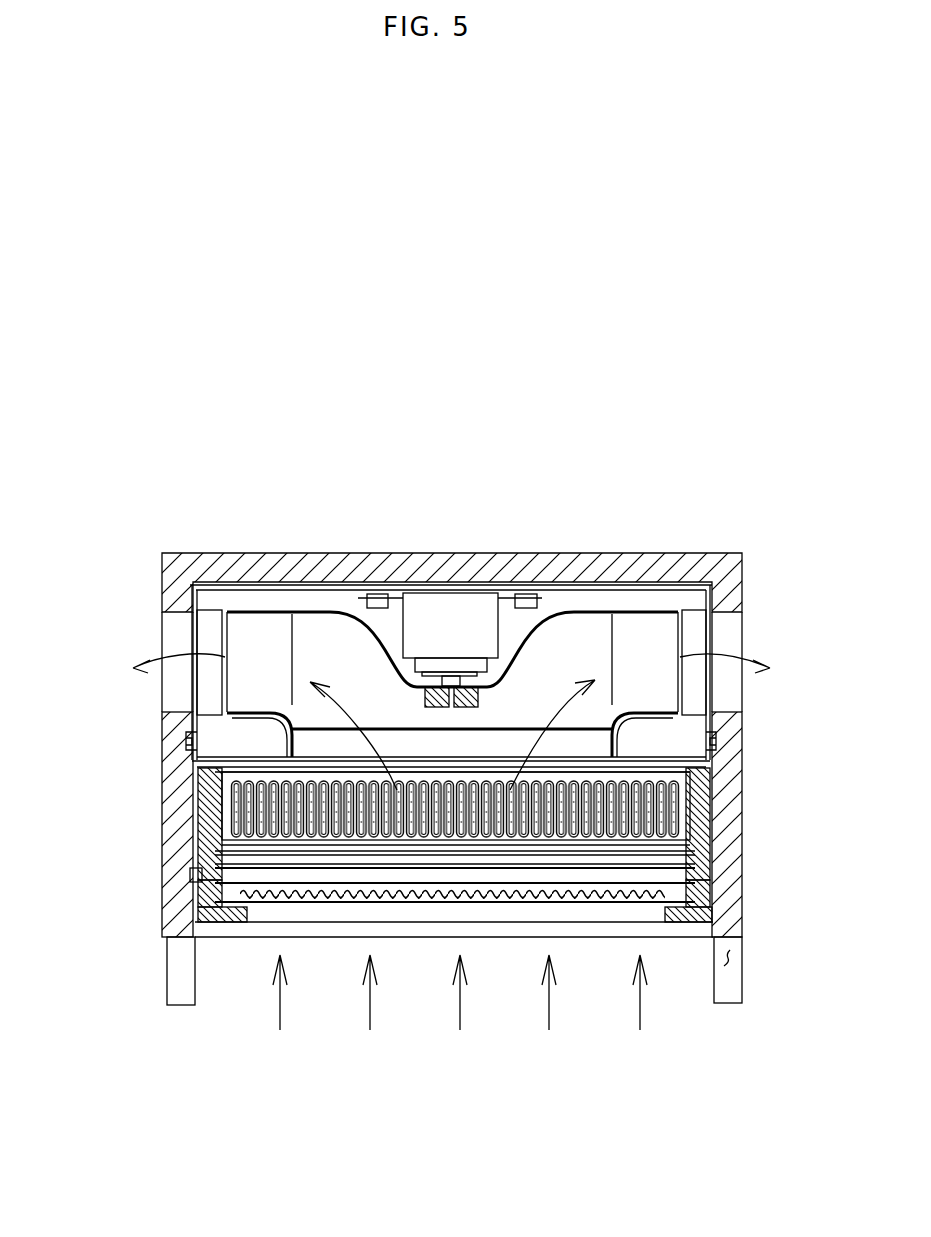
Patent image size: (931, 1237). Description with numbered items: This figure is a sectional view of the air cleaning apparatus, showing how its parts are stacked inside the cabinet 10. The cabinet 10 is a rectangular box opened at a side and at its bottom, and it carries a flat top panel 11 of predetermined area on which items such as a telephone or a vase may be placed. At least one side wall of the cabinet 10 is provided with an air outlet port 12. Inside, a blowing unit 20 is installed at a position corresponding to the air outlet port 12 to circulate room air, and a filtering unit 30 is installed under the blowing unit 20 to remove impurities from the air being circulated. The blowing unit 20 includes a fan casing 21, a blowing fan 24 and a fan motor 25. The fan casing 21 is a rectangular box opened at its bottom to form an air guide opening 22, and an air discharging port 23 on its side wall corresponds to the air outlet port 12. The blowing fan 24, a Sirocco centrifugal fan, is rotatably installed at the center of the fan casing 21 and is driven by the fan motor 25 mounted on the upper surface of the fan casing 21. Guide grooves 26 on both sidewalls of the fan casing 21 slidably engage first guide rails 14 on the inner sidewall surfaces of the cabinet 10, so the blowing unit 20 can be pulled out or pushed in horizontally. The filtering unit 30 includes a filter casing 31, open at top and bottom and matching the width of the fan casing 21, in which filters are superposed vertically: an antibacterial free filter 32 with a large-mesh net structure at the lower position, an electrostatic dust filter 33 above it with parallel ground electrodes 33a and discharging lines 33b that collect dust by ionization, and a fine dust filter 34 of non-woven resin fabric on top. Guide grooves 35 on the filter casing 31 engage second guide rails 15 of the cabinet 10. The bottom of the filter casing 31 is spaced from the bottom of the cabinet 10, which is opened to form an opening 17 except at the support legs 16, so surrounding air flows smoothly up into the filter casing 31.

The cabinet 10 is at (432, 738).
The top panel 11 is at (226, 558).
The air outlet port 12 is at (188, 617).
The first guide rails 14 is at (187, 758).
The second guide rails 15 is at (195, 893).
The support legs 16 is at (175, 971).
The opening 17 is at (732, 955).
The blowing unit 20 is at (456, 617).
The fan casing 21 is at (567, 590).
The air guide opening 22 is at (606, 728).
The air discharging port 23 is at (672, 606).
The blowing fan 24 is at (279, 612).
The fan motor 25 is at (450, 605).
The guide grooves 26 is at (195, 736).
The filtering unit 30 is at (465, 912).
The filter casing 31 is at (208, 800).
The antibacterial free filter 32 is at (700, 906).
The electrostatic dust filter 33 is at (690, 866).
The ground electrodes 33a is at (690, 880).
The discharging lines 33b is at (692, 852).
The fine dust filter 34 is at (670, 800).
The guide grooves 35 is at (195, 875).